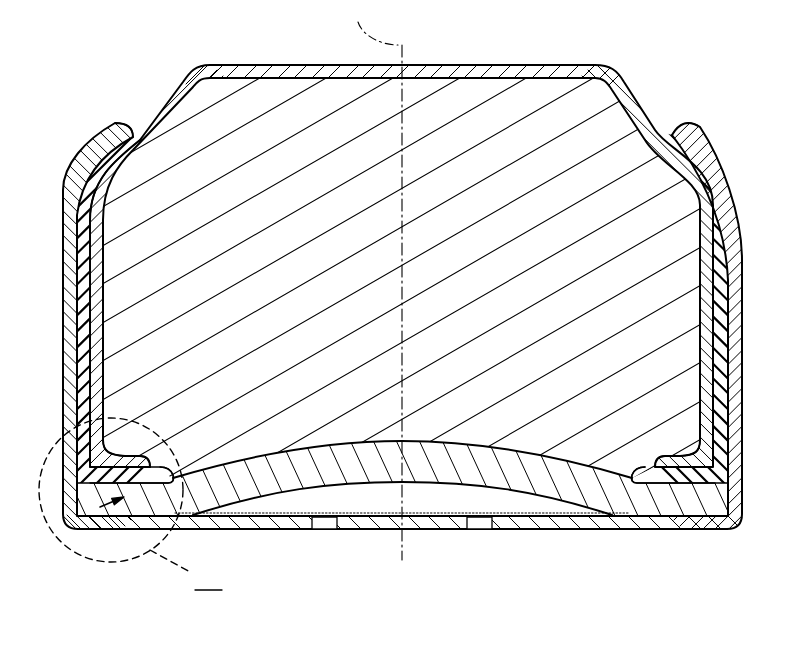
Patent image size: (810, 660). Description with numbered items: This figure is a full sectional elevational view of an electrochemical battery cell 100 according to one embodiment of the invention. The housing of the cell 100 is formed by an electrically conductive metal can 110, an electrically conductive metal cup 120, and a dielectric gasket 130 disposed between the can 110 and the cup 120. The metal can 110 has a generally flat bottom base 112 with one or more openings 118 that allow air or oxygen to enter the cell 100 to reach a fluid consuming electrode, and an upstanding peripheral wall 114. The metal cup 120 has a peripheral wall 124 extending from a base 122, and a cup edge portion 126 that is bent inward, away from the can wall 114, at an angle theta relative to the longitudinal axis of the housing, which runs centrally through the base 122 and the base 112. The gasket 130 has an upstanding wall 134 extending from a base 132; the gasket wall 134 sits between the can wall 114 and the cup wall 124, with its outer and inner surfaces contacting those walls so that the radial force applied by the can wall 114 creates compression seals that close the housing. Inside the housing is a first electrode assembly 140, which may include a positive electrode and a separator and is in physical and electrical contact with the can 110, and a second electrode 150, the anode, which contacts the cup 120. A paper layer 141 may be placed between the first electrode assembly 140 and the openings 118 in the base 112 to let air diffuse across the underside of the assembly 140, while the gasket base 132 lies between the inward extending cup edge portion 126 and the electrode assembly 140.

The electrochemical battery cell 100 is at (145, 56).
The metal can 110 is at (405, 340).
The bottom base 112 is at (417, 533).
The peripheral wall 114 is at (68, 383).
The openings 118 is at (323, 531).
The metal cup 120 is at (405, 266).
The base 122 is at (415, 66).
The peripheral wall 124 is at (66, 418).
The cup edge portion 126 is at (123, 445).
The dielectric gasket 130 is at (95, 139).
The gasket base 132 is at (137, 489).
The gasket wall 134 is at (83, 477).
The first electrode assembly 140 is at (720, 498).
The paper layer 141 is at (563, 525).
The second electrode 150 is at (505, 150).